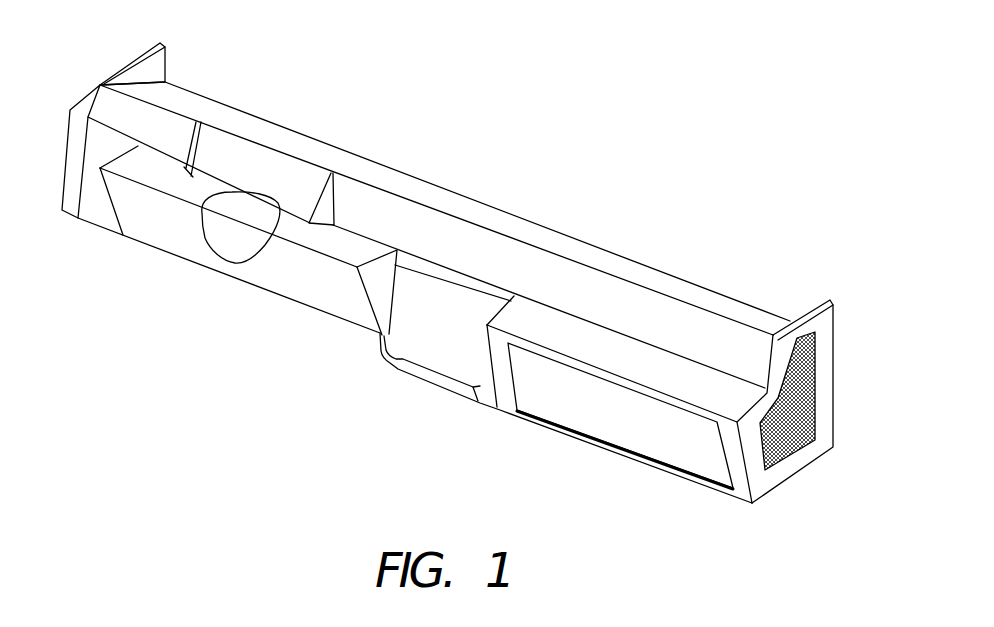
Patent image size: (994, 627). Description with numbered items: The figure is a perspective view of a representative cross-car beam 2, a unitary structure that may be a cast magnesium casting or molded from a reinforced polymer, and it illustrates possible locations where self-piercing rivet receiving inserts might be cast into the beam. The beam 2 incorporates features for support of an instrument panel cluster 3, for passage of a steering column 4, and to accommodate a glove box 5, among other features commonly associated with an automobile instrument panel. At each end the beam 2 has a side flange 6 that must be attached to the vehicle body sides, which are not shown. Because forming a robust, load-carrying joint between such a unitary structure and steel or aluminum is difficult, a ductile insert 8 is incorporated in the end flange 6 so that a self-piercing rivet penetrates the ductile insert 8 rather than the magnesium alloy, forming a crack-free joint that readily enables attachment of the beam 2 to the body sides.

The cross-car beam 2 is at (468, 256).
The instrument panel cluster 3 is at (155, 172).
The steering column 4 is at (231, 232).
The glove box 5 is at (620, 428).
The side flange 6 is at (122, 72).
The ductile insert 8 is at (806, 422).